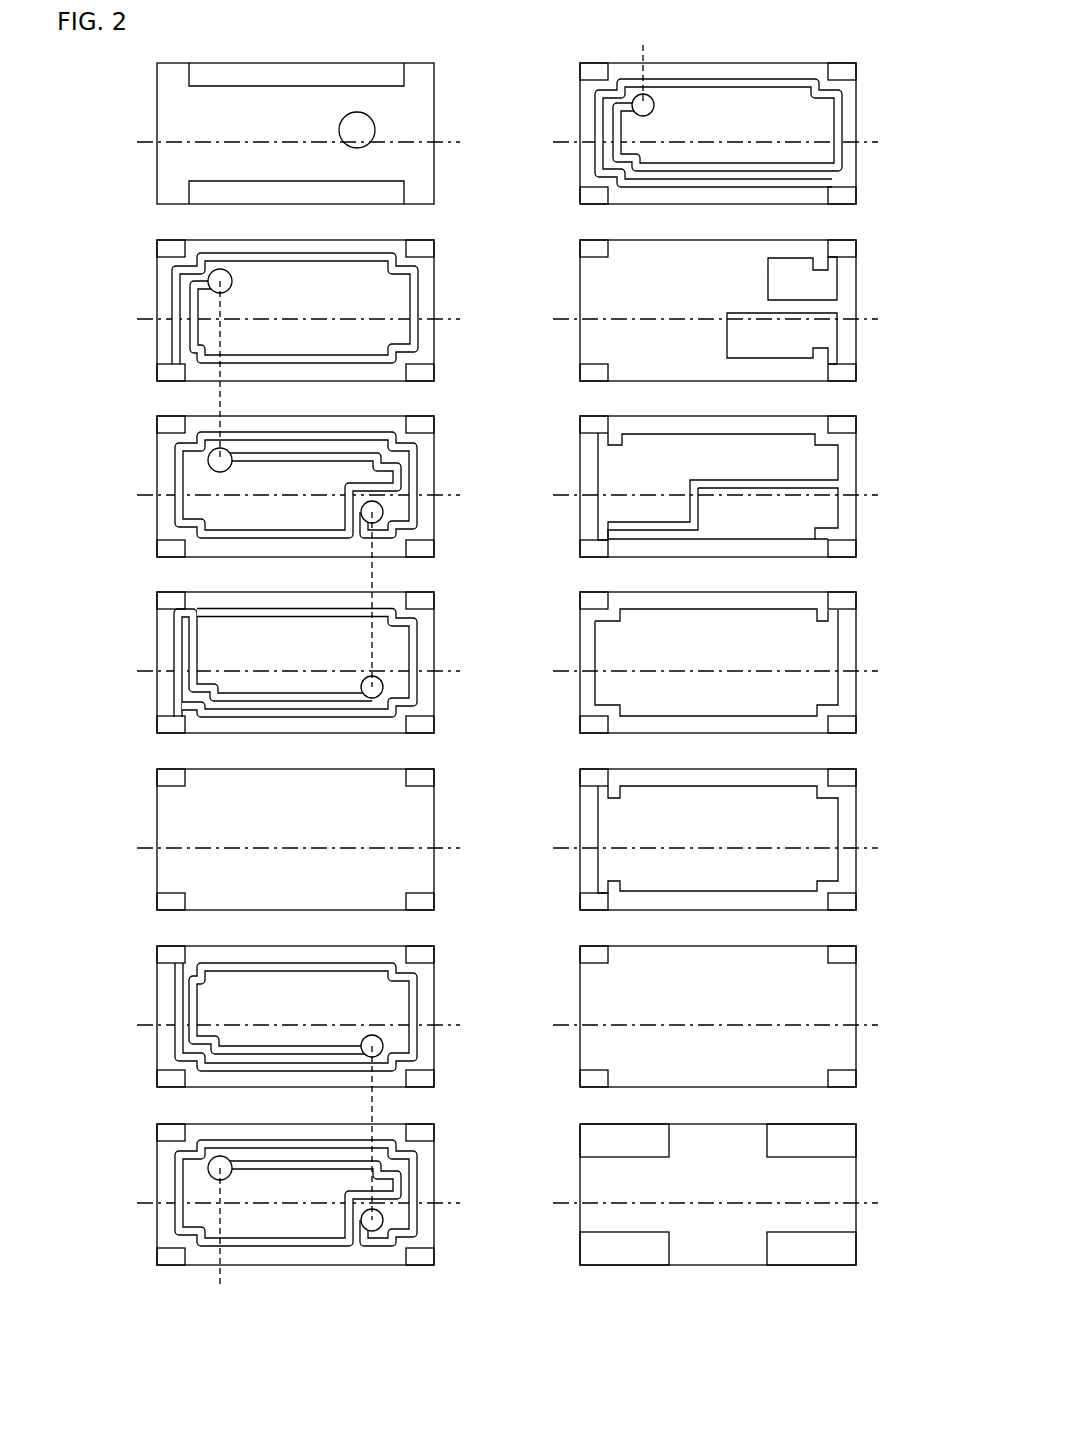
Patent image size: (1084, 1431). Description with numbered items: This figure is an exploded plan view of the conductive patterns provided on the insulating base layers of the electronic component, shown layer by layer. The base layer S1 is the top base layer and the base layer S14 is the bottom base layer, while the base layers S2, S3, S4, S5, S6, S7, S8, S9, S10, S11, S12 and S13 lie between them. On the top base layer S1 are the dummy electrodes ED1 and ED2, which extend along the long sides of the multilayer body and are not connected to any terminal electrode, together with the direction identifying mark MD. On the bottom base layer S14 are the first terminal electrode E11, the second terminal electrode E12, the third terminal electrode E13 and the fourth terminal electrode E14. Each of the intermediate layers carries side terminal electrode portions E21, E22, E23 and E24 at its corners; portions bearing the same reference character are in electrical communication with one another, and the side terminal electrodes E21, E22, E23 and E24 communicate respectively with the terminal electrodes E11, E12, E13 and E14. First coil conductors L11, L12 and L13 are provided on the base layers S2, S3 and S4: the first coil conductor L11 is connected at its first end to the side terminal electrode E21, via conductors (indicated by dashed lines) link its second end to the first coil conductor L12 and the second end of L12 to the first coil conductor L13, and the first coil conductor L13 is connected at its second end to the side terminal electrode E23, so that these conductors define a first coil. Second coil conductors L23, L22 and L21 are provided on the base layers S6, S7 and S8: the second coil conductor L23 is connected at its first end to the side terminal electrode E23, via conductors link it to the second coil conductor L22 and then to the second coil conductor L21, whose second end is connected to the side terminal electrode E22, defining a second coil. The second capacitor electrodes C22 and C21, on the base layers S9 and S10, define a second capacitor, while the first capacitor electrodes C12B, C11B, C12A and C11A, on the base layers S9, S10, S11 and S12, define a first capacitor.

The base layer S1 is at (428, 157).
The base layer S2 is at (428, 310).
The base layer S3 is at (428, 486).
The base layer S4 is at (428, 662).
The base layer S5 is at (428, 839).
The base layer S6 is at (428, 1016).
The base layer S7 is at (428, 1194).
The base layer S8 is at (848, 133).
The base layer S9 is at (848, 310).
The base layer S10 is at (848, 487).
The base layer S11 is at (848, 663).
The base layer S12 is at (848, 840).
The base layer S13 is at (848, 1017).
The base layer S14 is at (848, 1196).
The dummy electrode ED1 is at (205, 72).
The dummy electrode ED2 is at (205, 191).
The direction identifying mark MD is at (363, 128).
The side terminal electrode portion E21 is at (172, 369).
The side terminal electrode portion E22 is at (420, 372).
The side terminal electrode portion E23 is at (172, 247).
The side terminal electrode portion E24 is at (420, 247).
The first terminal electrode E11 is at (592, 1250).
The second terminal electrode E12 is at (845, 1248).
The third terminal electrode E13 is at (592, 1141).
The fourth terminal electrode E14 is at (845, 1143).
The first coil conductor L11 is at (172, 318).
The first coil conductor L12 is at (172, 494).
The first coil conductor L13 is at (172, 670).
The second coil conductor L21 is at (602, 132).
The second coil conductor L22 is at (172, 1202).
The second coil conductor L23 is at (172, 1024).
The first capacitor electrode C11A is at (760, 840).
The first capacitor electrode C11B is at (678, 493).
The first capacitor electrode C12A is at (760, 663).
The first capacitor electrode C12B is at (772, 282).
The second capacitor electrode C21 is at (790, 528).
The second capacitor electrode C22 is at (733, 334).